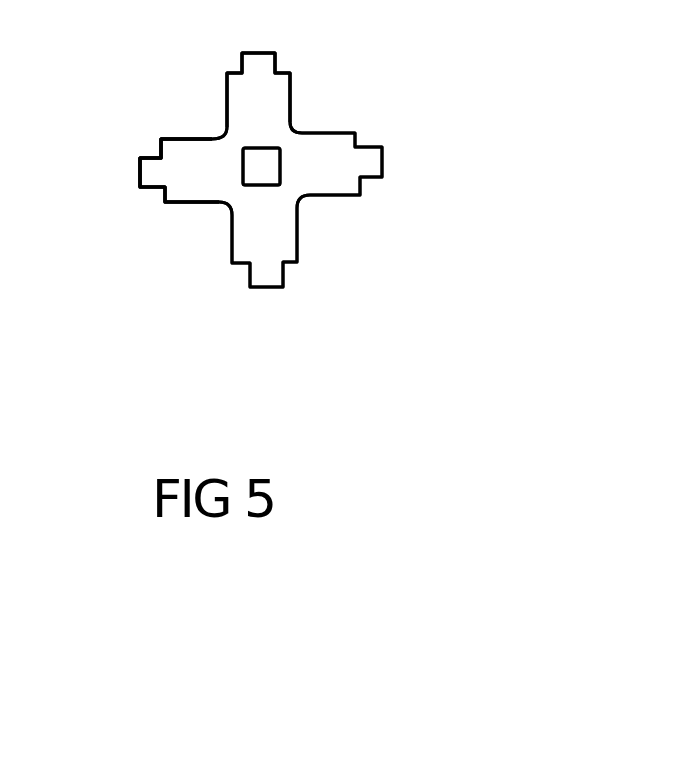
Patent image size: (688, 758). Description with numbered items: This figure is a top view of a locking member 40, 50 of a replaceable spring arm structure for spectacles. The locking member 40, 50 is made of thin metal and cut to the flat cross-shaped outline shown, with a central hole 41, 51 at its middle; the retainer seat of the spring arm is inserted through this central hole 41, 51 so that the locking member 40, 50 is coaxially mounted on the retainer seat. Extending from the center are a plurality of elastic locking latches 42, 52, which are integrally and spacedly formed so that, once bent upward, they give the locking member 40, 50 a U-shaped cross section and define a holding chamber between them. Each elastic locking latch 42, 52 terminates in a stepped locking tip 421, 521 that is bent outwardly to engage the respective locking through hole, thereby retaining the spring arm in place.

The locking member 40 is at (395, 272).
The locking member 50 is at (353, 200).
The central hole 41 is at (265, 170).
The central hole 51 is at (261, 166).
The elastic locking latch 42 is at (187, 185).
The elastic locking latch 52 is at (248, 238).
The locking tip 421 is at (248, 56).
The locking tip 521 is at (142, 162).